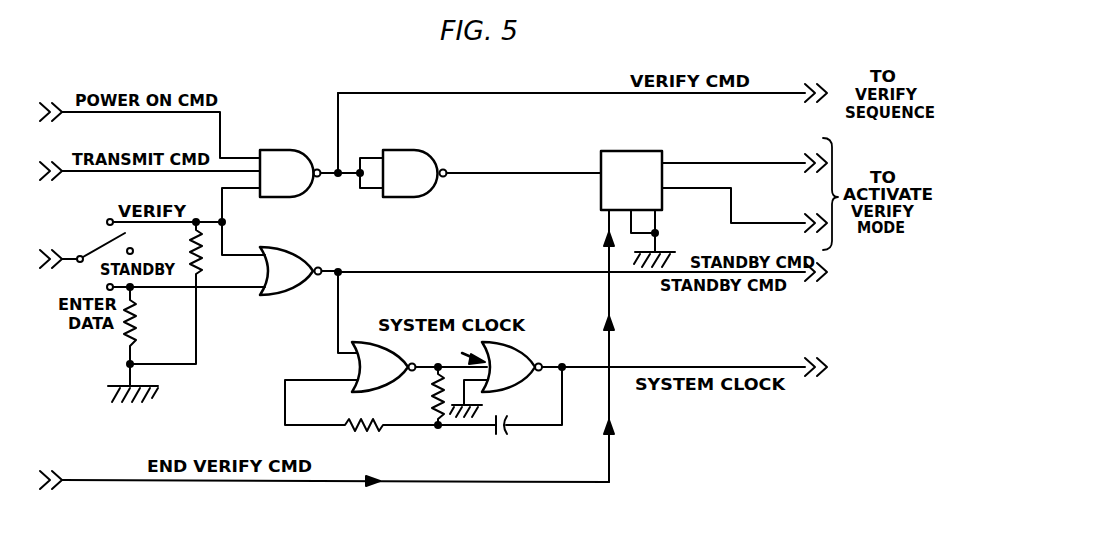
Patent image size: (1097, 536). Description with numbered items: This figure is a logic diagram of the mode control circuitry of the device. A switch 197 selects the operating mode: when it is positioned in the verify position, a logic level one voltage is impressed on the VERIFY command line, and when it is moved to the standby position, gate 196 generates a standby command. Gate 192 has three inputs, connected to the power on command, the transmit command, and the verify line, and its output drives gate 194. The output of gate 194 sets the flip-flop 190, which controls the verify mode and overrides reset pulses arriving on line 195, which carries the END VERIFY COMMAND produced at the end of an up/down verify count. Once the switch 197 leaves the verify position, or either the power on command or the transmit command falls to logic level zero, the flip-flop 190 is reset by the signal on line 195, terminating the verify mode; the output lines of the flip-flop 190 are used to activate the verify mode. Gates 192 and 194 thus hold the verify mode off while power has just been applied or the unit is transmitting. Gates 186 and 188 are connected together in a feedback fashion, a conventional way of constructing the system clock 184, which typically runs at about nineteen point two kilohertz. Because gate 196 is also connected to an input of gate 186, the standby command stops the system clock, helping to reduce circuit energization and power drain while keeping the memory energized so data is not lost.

The system clock 184 is at (452, 352).
The gate 186 is at (350, 365).
The gate 188 is at (530, 350).
The flip-flop 190 is at (625, 150).
The gate 192 is at (273, 148).
The gate 194 is at (402, 148).
The line 195 is at (610, 298).
The gate 196 is at (268, 246).
The switch 197 is at (102, 246).